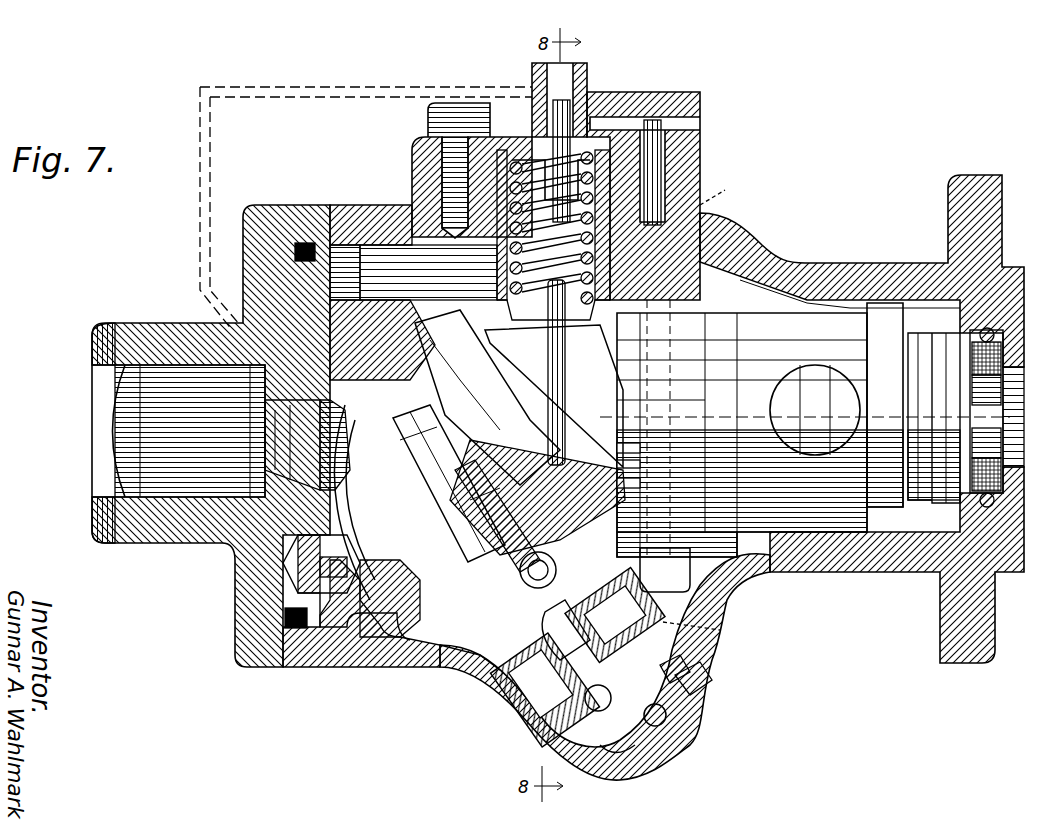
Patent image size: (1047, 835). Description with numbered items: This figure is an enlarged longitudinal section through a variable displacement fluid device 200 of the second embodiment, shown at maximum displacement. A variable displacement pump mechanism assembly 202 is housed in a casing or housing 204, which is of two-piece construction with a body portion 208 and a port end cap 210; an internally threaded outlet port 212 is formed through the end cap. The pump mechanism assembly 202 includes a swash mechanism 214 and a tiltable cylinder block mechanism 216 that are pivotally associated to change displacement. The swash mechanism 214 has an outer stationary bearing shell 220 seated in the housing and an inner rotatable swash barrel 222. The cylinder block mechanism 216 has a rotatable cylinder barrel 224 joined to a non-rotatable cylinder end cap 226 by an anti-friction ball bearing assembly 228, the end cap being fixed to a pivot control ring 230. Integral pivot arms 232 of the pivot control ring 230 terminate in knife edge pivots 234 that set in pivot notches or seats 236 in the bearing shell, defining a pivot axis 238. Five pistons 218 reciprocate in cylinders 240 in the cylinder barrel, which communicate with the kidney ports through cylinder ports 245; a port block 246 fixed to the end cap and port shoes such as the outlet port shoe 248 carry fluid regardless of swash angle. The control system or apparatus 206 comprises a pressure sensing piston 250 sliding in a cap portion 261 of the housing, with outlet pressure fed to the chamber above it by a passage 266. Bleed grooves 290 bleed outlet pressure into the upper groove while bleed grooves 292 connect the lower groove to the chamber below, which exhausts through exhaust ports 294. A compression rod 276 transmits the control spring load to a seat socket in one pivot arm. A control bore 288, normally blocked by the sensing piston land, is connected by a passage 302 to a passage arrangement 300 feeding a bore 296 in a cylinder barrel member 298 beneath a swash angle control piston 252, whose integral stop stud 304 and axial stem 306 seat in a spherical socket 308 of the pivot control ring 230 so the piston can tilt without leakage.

The variable displacement fluid device 200 is at (851, 521).
The variable displacement pump mechanism assembly 202 is at (744, 336).
The casing or housing 204 is at (847, 273).
The control system or apparatus 206 is at (667, 673).
The body portion 208 is at (393, 663).
The port end cap 210 is at (247, 593).
The outlet port 212 is at (133, 473).
The swash mechanism 214 is at (944, 341).
The tiltable cylinder block mechanism 216 is at (397, 663).
The pistons 218 is at (497, 531).
The outer stationary bearing shell 220 is at (882, 308).
The inner rotatable swash barrel 222 is at (826, 451).
The rotatable cylinder barrel 224 is at (462, 675).
The non-rotatable cylinder end cap 226 is at (363, 663).
The anti-friction ball bearing assembly 228 is at (577, 527).
The pivot control ring 230 is at (455, 325).
The pivot arms 232 is at (578, 440).
The knife edge pivots 234 is at (640, 463).
The pivot notches or seats 236 is at (640, 488).
The pivot axis 238 is at (617, 448).
The cylinders 240 is at (508, 528).
The cylinder ports 245 is at (483, 507).
The port block 246 is at (425, 300).
The outlet port shoe 248 is at (360, 447).
The pressure sensing piston 250 is at (583, 115).
The swash angle control piston 252 is at (692, 680).
The cap portion 261 is at (700, 142).
The passage 266 is at (200, 258).
The compression rod 276 is at (655, 138).
The control bore 288 is at (610, 127).
The bleed grooves 290 is at (578, 628).
The bleed grooves 292 is at (443, 413).
The exhaust ports 294 is at (507, 305).
The bore 296 is at (637, 587).
The cylinder barrel member 298 is at (542, 738).
The passage arrangement 300 is at (665, 714).
The passage 302 is at (709, 409).
The stop stud 304 is at (623, 743).
The axial stem 306 is at (560, 647).
The spherical socket 308 is at (615, 614).